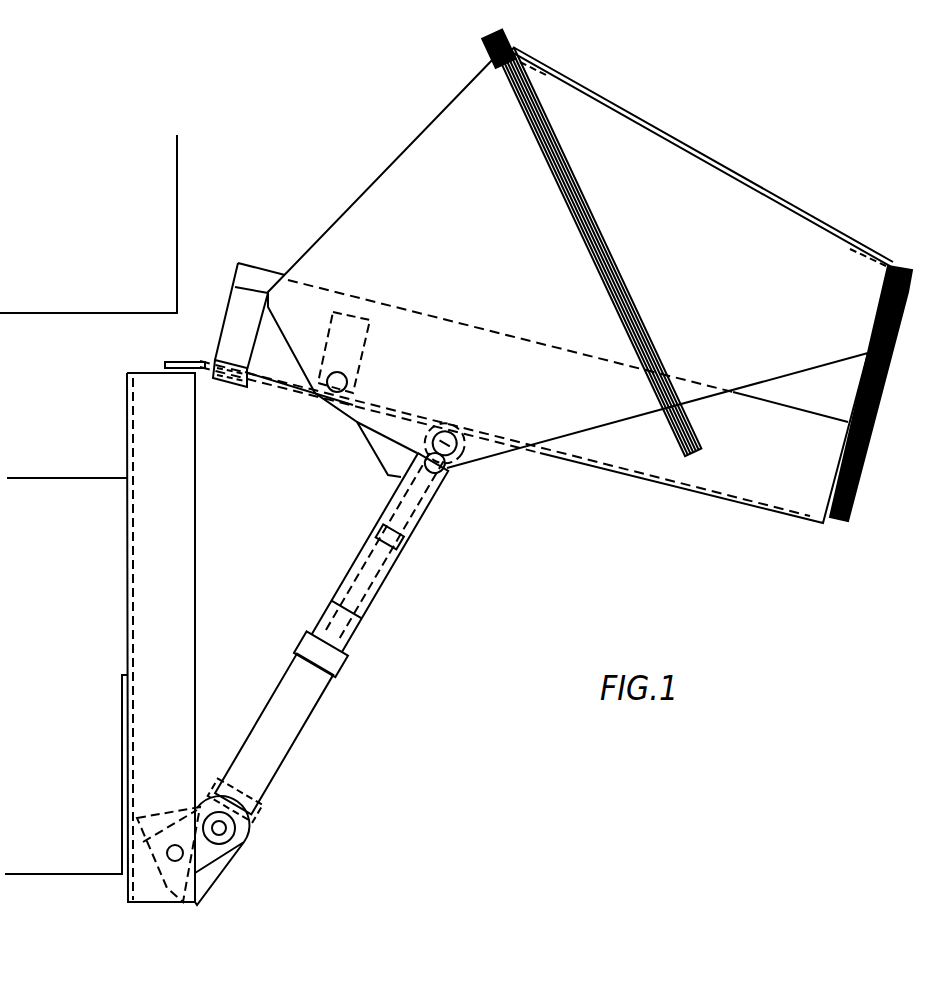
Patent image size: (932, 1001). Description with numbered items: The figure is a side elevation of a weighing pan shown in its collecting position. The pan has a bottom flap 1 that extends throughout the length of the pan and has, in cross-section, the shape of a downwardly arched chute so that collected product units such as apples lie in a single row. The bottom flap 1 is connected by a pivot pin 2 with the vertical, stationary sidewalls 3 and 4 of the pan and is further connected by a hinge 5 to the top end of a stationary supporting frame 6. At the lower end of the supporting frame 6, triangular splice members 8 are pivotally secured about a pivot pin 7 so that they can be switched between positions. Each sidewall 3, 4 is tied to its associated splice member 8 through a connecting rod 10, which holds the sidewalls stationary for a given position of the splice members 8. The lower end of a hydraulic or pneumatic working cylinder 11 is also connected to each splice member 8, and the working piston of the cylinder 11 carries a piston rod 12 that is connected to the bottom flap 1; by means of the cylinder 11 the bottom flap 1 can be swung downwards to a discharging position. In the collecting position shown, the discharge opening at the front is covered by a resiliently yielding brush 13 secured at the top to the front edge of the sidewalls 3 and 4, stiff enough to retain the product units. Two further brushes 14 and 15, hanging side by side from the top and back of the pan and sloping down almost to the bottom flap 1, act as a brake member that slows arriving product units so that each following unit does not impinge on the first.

The bottom flap 1 is at (741, 487).
The pivot pin 2 is at (355, 375).
The sidewall 3 is at (702, 161).
The sidewall 4 is at (745, 275).
The hinge 5 is at (217, 383).
The supporting frame 6 is at (183, 507).
The pivot pin 7 is at (175, 845).
The splice member 8 is at (238, 847).
The connecting rod 10 is at (380, 598).
The working cylinder 11 is at (300, 713).
The piston rod 12 is at (397, 568).
The brush 13 is at (885, 380).
The brush 14 is at (591, 243).
The brush 15 is at (570, 195).